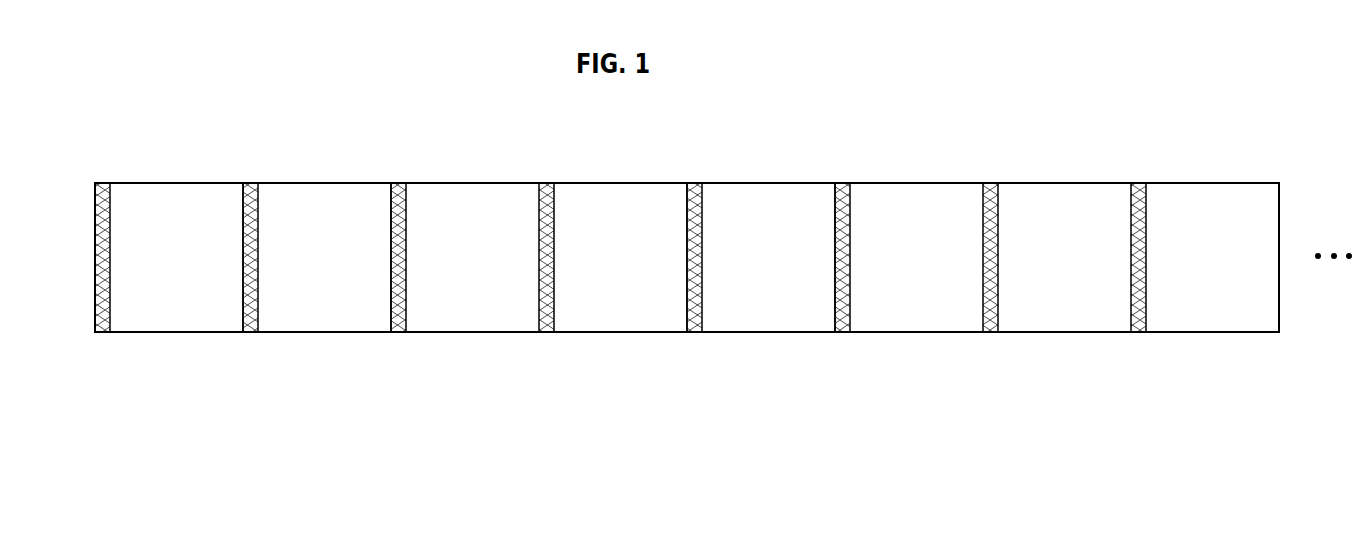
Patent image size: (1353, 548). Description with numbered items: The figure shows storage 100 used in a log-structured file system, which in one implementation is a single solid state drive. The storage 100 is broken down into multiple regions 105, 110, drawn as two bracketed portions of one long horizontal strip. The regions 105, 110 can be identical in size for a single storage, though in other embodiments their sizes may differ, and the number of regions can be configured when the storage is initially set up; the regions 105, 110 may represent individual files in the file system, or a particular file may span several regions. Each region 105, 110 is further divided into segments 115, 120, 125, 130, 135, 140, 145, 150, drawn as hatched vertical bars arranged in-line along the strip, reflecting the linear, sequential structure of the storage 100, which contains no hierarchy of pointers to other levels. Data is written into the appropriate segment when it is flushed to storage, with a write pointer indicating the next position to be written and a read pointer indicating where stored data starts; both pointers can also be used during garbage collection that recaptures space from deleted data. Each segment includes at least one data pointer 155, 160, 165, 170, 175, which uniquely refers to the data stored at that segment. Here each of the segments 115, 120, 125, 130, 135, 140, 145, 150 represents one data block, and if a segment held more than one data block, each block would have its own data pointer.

The storage 100 is at (255, 57).
The region 105 is at (95, 337).
The region 110 is at (687, 337).
The segment 115 is at (179, 187).
The segment 120 is at (299, 187).
The segment 125 is at (437, 187).
The segment 130 is at (595, 187).
The segment 135 is at (743, 187).
The segment 140 is at (882, 187).
The segment 145 is at (1058, 187).
The segment 150 is at (1176, 187).
The data pointer 155 is at (97, 243).
The data pointer 160 is at (244, 242).
The data pointer 165 is at (392, 238).
The data pointer 170 is at (688, 242).
The data pointer 175 is at (840, 255).